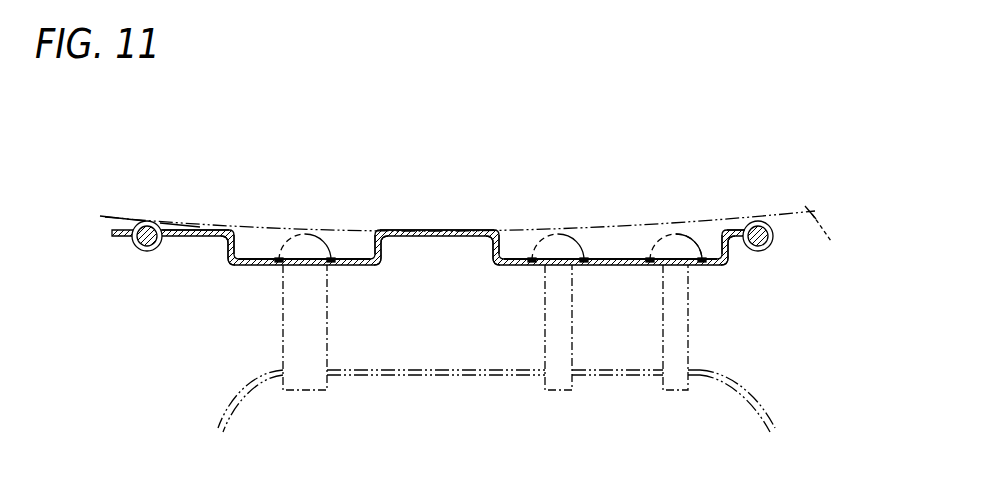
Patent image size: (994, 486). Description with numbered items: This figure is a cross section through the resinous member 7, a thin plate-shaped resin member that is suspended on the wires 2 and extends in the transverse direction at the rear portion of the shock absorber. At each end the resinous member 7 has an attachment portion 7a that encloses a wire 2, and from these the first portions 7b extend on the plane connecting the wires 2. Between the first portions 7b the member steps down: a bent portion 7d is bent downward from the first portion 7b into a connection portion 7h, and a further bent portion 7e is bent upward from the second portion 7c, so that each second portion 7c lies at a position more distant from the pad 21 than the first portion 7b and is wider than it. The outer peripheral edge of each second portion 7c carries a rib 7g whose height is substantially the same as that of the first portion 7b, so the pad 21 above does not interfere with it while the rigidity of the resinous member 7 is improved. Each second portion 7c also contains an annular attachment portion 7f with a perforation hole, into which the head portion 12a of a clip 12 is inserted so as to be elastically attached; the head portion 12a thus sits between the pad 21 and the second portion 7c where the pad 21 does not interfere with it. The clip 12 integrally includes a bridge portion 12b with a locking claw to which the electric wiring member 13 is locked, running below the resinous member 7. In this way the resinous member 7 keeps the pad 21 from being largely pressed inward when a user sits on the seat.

The resinous member 7 is at (403, 148).
The attachment portion 7a is at (148, 221).
The first portion 7b is at (196, 230).
The second portion 7c is at (262, 268).
The bent portion 7d is at (232, 234).
The bent portion 7e is at (506, 250).
The annular attachment portion 7f is at (340, 230).
The rib 7g is at (262, 240).
The connection portion 7h is at (232, 258).
The clip 12 is at (338, 401).
The head portion 12a is at (318, 236).
The bridge portion 12b is at (317, 355).
The electric wiring member 13 is at (437, 380).
The wire 2 is at (143, 247).
The pad 21 is at (481, 239).